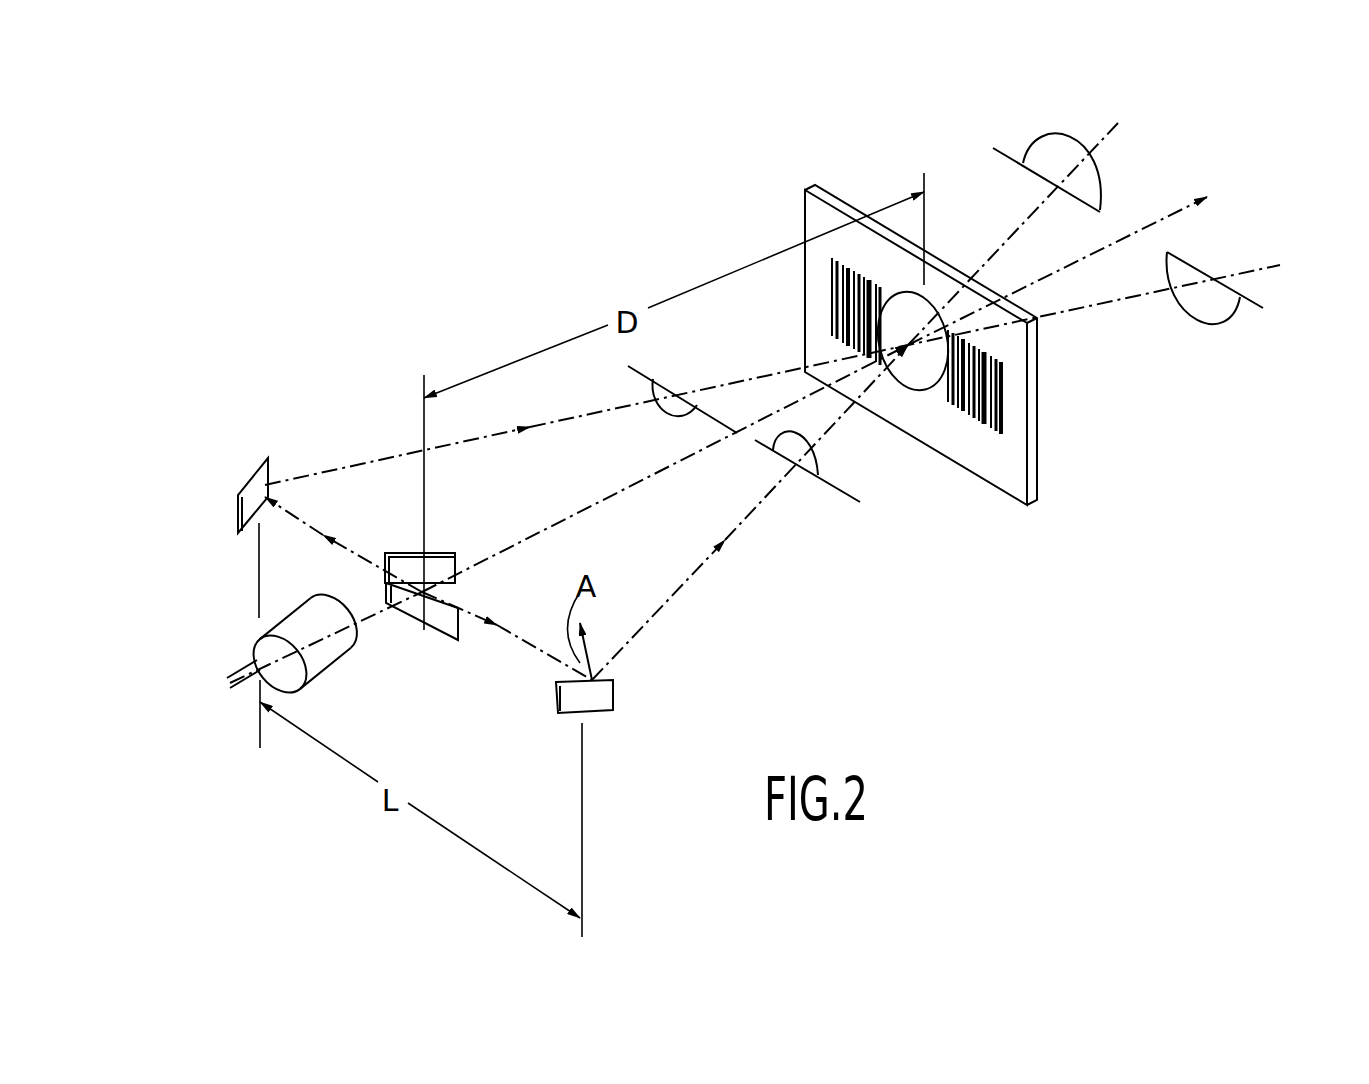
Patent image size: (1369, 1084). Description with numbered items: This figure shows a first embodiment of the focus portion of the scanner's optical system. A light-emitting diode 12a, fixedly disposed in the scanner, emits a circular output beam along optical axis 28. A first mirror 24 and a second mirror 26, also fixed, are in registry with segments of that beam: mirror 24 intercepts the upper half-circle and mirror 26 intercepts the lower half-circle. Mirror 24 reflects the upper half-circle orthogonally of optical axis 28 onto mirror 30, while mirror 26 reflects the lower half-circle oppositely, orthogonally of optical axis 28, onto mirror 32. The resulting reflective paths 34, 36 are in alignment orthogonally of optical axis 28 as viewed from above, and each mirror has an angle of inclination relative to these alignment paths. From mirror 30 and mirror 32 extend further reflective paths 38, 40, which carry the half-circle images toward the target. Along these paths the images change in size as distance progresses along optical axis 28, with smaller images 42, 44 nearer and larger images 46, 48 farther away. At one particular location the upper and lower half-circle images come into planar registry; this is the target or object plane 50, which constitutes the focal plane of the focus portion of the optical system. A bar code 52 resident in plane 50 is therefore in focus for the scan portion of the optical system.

The light-emitting diode 12a is at (327, 681).
The first mirror 24 is at (437, 552).
The second mirror 26 is at (438, 638).
The optical axis 28 is at (600, 495).
The mirror 30 is at (613, 695).
The mirror 32 is at (257, 472).
The reflective path 34 is at (534, 640).
The reflective path 36 is at (347, 548).
The further reflective path 38 is at (743, 527).
The further reflective path 40 is at (505, 433).
The smaller image of half-circle 42 is at (818, 457).
The smaller image of half-circle 44 is at (672, 422).
The larger image of half-circle 46 is at (1050, 135).
The larger image of half-circle 48 is at (1205, 302).
The target or object plane 50 is at (1043, 452).
The bar code 52 is at (957, 417).